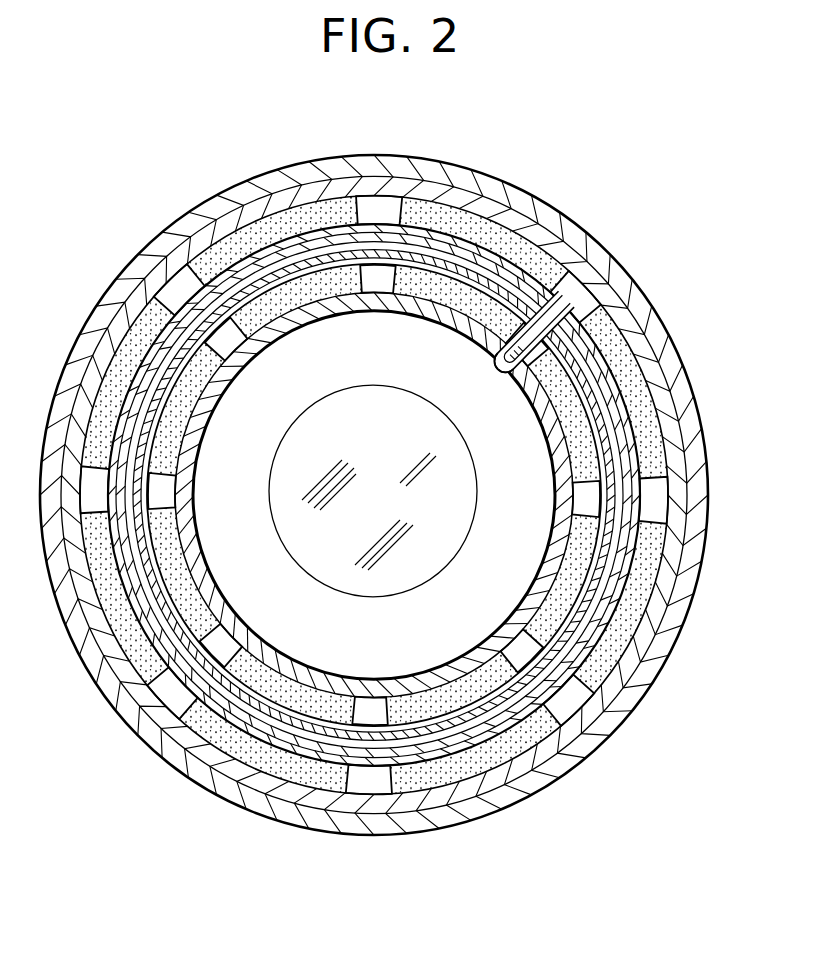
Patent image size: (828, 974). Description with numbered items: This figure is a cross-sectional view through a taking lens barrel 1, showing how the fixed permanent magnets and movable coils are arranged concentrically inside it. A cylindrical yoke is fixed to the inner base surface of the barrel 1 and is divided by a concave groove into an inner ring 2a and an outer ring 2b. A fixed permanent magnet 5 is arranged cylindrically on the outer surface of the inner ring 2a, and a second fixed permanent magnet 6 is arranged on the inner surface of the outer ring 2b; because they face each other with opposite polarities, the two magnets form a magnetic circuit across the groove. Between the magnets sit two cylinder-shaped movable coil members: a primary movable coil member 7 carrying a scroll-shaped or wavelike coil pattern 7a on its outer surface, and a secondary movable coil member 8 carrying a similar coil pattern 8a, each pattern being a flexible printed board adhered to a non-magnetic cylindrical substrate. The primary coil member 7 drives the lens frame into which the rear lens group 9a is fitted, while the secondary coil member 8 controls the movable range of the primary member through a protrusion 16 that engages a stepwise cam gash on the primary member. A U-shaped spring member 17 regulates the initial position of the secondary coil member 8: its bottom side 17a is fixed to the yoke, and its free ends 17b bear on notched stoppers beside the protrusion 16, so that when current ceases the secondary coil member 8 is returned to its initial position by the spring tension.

The taking lens barrel 1 is at (533, 207).
The inner ring 2a is at (333, 316).
The outer ring 2b is at (543, 232).
The fixed permanent magnet 5 is at (418, 287).
The fixed permanent magnet 6 is at (476, 228).
The primary movable coil member 7 is at (597, 370).
The coil pattern 7a is at (620, 393).
The secondary movable coil member 8 is at (590, 393).
The coil pattern 8a is at (603, 414).
The rear lens group 9a is at (313, 412).
The protrusion 16 is at (590, 295).
The spring member 17 is at (513, 375).
The bottom side 17a is at (497, 364).
The free end 17b is at (547, 307).